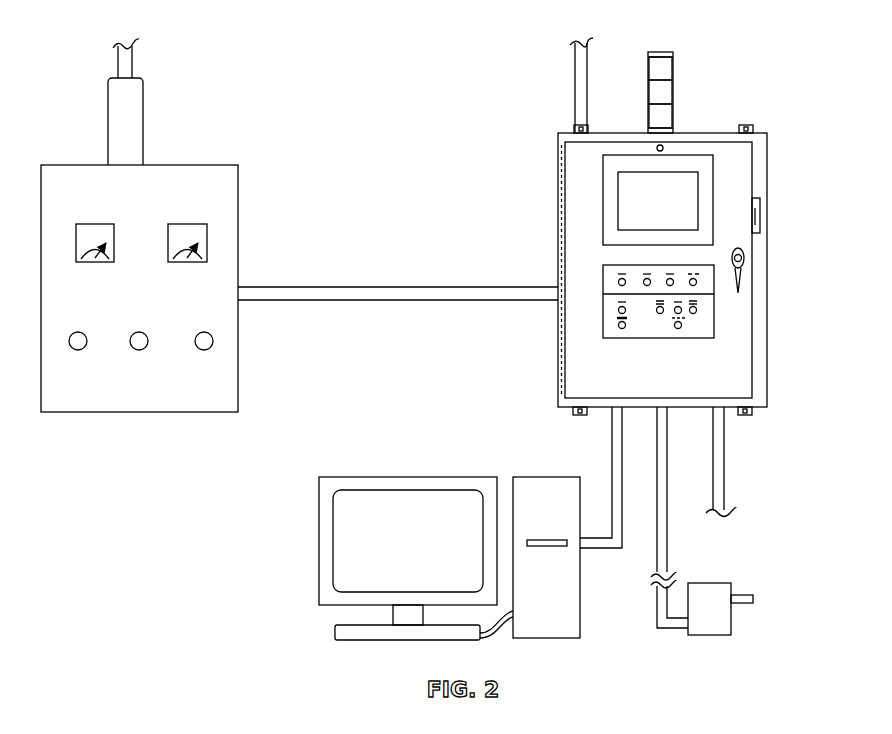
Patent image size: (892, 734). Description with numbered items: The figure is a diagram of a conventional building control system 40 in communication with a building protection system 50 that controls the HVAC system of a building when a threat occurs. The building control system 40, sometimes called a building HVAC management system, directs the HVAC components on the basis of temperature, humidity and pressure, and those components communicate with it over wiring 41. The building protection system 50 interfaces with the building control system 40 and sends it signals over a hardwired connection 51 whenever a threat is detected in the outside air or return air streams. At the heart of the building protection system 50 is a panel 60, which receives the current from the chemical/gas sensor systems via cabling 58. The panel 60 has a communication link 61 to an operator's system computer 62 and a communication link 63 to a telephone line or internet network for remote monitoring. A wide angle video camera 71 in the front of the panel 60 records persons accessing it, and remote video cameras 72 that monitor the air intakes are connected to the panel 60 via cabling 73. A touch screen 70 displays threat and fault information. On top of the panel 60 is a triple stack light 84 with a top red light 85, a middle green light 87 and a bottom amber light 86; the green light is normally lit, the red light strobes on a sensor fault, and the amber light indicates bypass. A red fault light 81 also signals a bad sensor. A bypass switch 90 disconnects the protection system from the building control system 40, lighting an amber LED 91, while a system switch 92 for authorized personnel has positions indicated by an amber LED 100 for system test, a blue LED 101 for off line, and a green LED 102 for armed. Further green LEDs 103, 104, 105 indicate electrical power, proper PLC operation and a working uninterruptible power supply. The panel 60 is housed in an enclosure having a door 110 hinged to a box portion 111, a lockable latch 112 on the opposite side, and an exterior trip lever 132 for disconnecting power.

The building control system 40 is at (101, 305).
The wiring 41 is at (141, 97).
The building protection system 50 is at (490, 191).
The hardwired connection 51 is at (423, 286).
The cabling 58 is at (585, 50).
The panel 60 is at (771, 149).
The communication link 61 is at (623, 488).
The operator's system computer 62 is at (534, 527).
The communication link 63 is at (726, 490).
The touch screen 70 is at (644, 209).
The wide angle video camera 71 is at (656, 146).
The remote video camera 72 is at (697, 619).
The cabling 73 is at (668, 488).
The red fault light 81 is at (697, 282).
The triple stack light 84 is at (641, 128).
The top red light 85 is at (674, 66).
The bottom amber light 86 is at (674, 118).
The middle green light 87 is at (674, 92).
The bypass switch 90 is at (619, 327).
The amber LED 91 is at (619, 308).
The system switch 92 is at (682, 325).
The amber LED 100 is at (658, 313).
The blue LED 101 is at (677, 313).
The green LED 102 is at (697, 310).
The green LED 103 is at (619, 280).
The green LED 104 is at (644, 279).
The green LED 105 is at (668, 279).
The door 110 is at (660, 369).
The box portion 111 is at (767, 184).
The lockable latch 112 is at (745, 257).
The exterior trip lever 132 is at (761, 215).